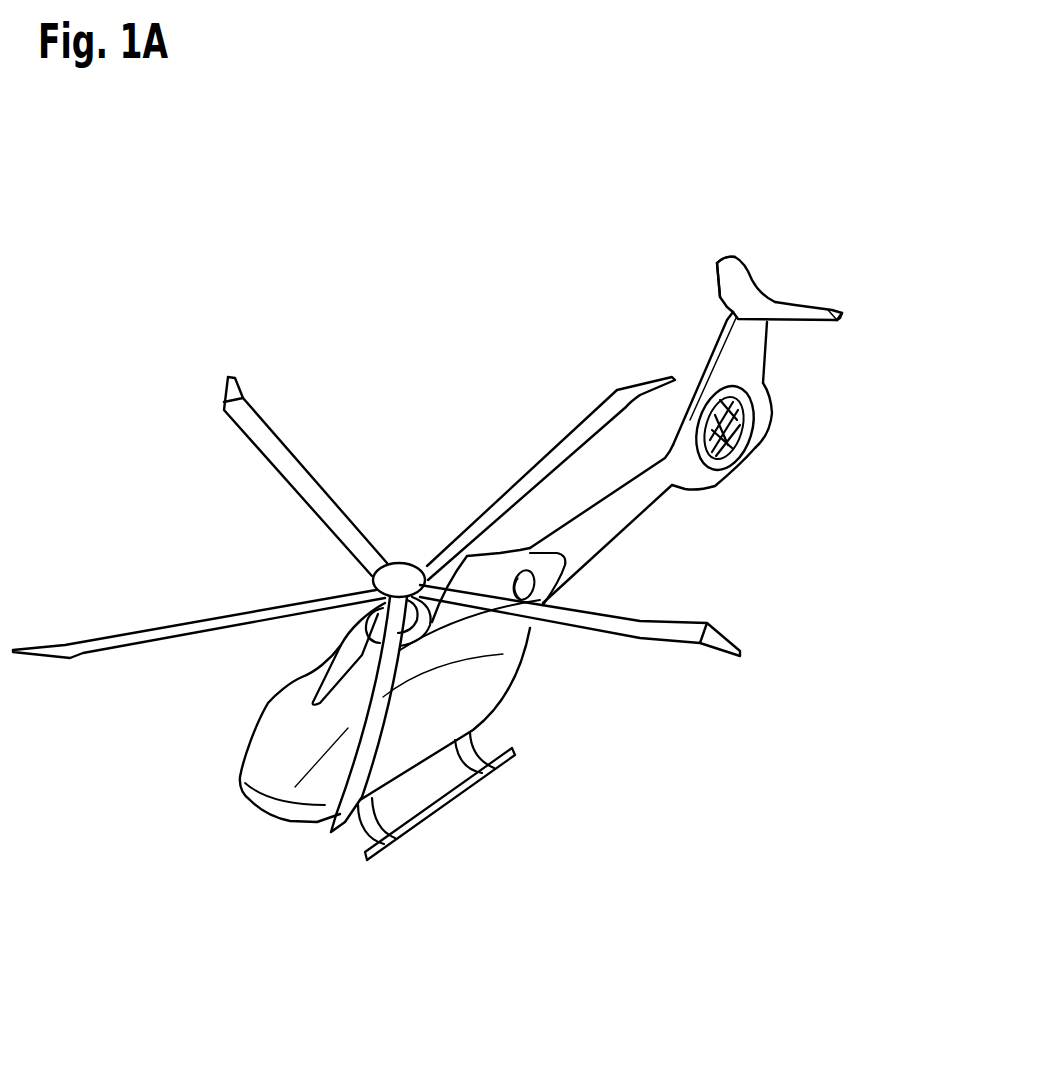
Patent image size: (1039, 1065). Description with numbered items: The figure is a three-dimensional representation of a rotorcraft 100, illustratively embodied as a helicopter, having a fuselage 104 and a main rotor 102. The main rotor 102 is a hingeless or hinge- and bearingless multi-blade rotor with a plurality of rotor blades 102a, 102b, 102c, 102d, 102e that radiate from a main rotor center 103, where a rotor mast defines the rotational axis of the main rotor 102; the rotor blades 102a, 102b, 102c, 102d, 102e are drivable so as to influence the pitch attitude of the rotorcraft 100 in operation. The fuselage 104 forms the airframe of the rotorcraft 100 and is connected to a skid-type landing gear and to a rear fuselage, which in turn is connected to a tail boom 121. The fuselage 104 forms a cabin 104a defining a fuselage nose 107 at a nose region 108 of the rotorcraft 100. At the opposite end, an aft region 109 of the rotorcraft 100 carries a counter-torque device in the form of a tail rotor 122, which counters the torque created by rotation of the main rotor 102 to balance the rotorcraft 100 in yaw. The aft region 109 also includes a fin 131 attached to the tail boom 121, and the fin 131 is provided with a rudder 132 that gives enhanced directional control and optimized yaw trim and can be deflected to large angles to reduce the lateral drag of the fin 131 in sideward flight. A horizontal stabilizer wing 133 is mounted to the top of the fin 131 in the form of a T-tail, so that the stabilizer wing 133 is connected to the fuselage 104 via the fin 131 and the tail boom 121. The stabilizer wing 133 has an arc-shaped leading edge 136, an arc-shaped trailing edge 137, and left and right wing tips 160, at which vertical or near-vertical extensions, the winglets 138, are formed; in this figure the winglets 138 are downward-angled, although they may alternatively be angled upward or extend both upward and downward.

The rotorcraft 100 is at (445, 405).
The main rotor 102 is at (405, 537).
The rotor blade 102a is at (268, 434).
The rotor blade 102b is at (122, 638).
The rotor blade 102c is at (350, 792).
The rotor blade 102d is at (648, 641).
The rotor blade 102e is at (538, 472).
The main rotor center 103 is at (374, 581).
The fuselage 104 is at (481, 692).
The cabin 104a is at (299, 691).
The fuselage nose 107 is at (255, 823).
The nose region 108 is at (224, 803).
The aft region 109 is at (785, 412).
The tail boom 121 is at (640, 500).
The tail rotor 122 is at (733, 445).
The fin 131 is at (724, 352).
The rudder 132 is at (748, 360).
The horizontal stabilizer wing 133 is at (738, 258).
The leading edge 136 is at (718, 296).
The trailing edge 137 is at (782, 293).
The winglets 138 is at (736, 273).
The wing tips 160 is at (716, 259).